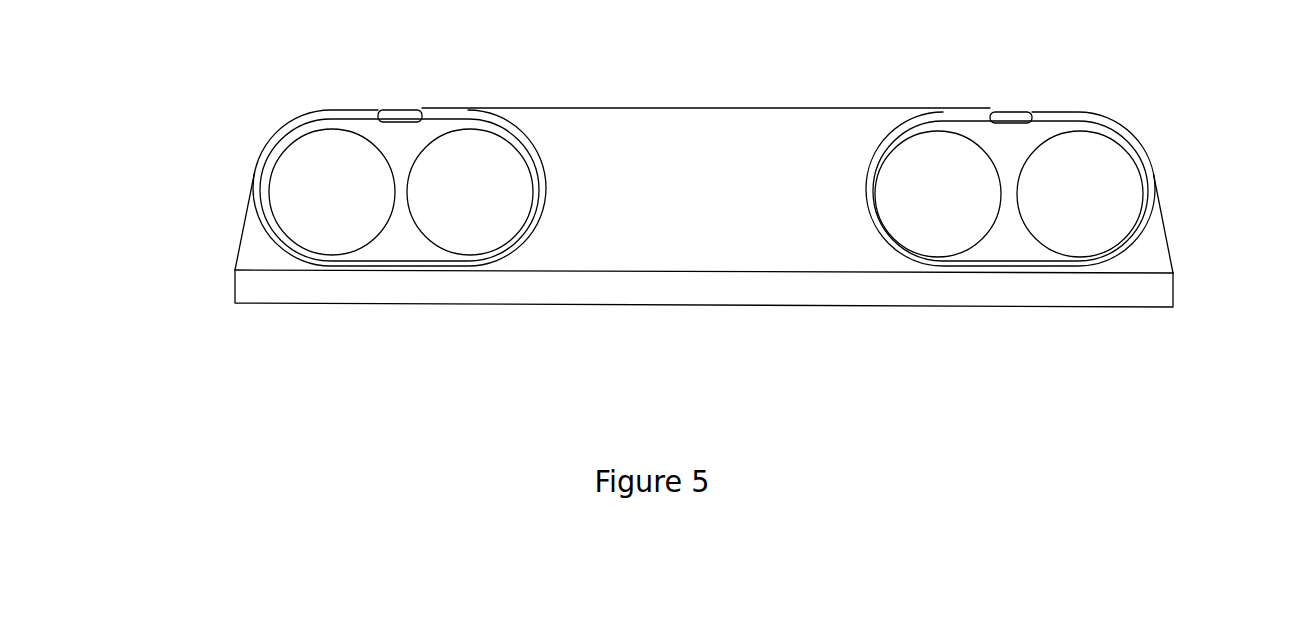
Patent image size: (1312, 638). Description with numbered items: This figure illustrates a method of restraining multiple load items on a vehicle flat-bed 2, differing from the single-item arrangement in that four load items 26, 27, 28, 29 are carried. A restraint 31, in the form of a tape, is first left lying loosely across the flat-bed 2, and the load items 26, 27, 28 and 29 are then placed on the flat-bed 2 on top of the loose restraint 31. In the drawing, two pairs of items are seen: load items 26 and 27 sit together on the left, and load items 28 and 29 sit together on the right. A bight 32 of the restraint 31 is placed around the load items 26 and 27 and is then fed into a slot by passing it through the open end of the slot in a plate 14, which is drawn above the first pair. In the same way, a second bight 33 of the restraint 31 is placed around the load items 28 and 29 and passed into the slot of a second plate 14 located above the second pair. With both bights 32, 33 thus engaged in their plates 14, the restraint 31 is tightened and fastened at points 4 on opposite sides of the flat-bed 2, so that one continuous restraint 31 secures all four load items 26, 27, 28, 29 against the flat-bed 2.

The flat-bed 2 is at (932, 307).
The fastening points 4 is at (237, 270).
The plate 14 is at (403, 105).
The load item 26 is at (327, 191).
The load item 27 is at (458, 172).
The load item 28 is at (932, 177).
The load item 29 is at (1102, 190).
The restraint 31 is at (694, 105).
The bight 32 is at (532, 235).
The bight 33 is at (872, 227).